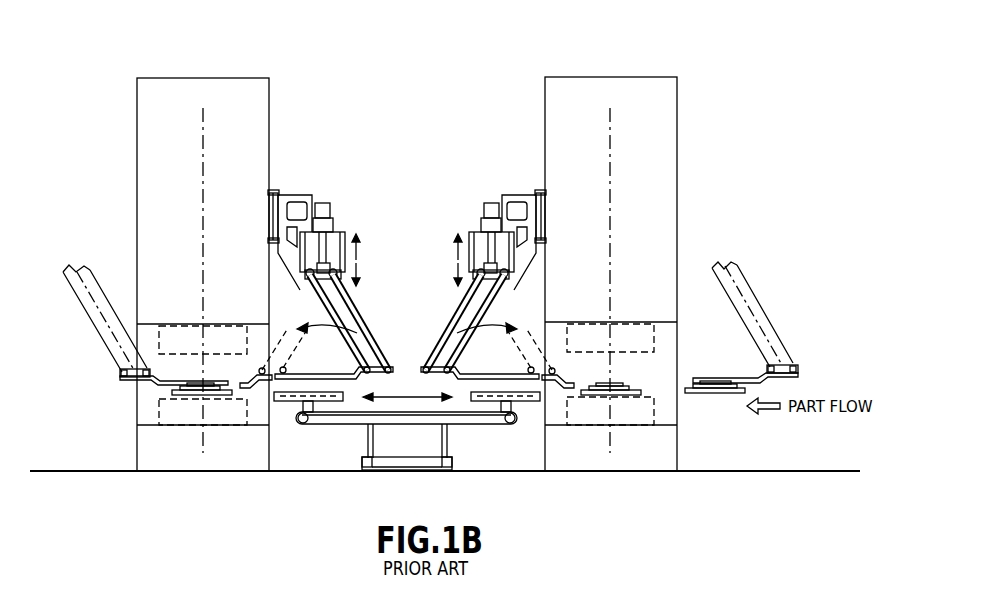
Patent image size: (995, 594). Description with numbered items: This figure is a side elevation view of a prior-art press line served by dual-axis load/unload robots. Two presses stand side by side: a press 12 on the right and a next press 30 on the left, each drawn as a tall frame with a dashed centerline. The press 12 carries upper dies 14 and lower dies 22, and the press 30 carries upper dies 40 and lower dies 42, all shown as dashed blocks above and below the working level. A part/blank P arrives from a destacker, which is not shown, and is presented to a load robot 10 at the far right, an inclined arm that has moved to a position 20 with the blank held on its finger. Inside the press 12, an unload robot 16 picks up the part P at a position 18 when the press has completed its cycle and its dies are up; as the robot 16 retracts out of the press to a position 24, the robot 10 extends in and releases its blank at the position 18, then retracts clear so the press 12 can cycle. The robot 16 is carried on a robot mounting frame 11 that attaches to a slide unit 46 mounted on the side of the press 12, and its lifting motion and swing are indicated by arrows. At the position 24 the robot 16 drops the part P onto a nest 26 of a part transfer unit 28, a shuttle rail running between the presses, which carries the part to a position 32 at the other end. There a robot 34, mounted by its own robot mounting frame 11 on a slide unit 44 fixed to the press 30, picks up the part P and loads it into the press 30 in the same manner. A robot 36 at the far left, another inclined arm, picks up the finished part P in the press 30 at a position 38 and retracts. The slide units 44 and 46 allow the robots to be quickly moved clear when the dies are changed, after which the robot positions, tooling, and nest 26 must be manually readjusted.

The load robot 10 is at (758, 300).
The robot mounting frame 11 is at (300, 197).
The press 12 is at (610, 77).
The dies 14 is at (618, 333).
The unload robot 16 is at (472, 232).
The position 18 is at (617, 405).
The position 20 is at (710, 373).
The dies 22 is at (590, 413).
The position 24 is at (522, 410).
The nest 26 is at (483, 398).
The part transfer unit 28 is at (346, 430).
The press 30 is at (200, 78).
The position 32 is at (292, 412).
The robot 34 is at (338, 231).
The robot 36 is at (92, 314).
The position 38 is at (197, 408).
The dies 40 is at (212, 338).
The dies 42 is at (227, 418).
The slide unit 44 is at (273, 193).
The slide unit 46 is at (543, 189).
The part/blank P is at (712, 393).